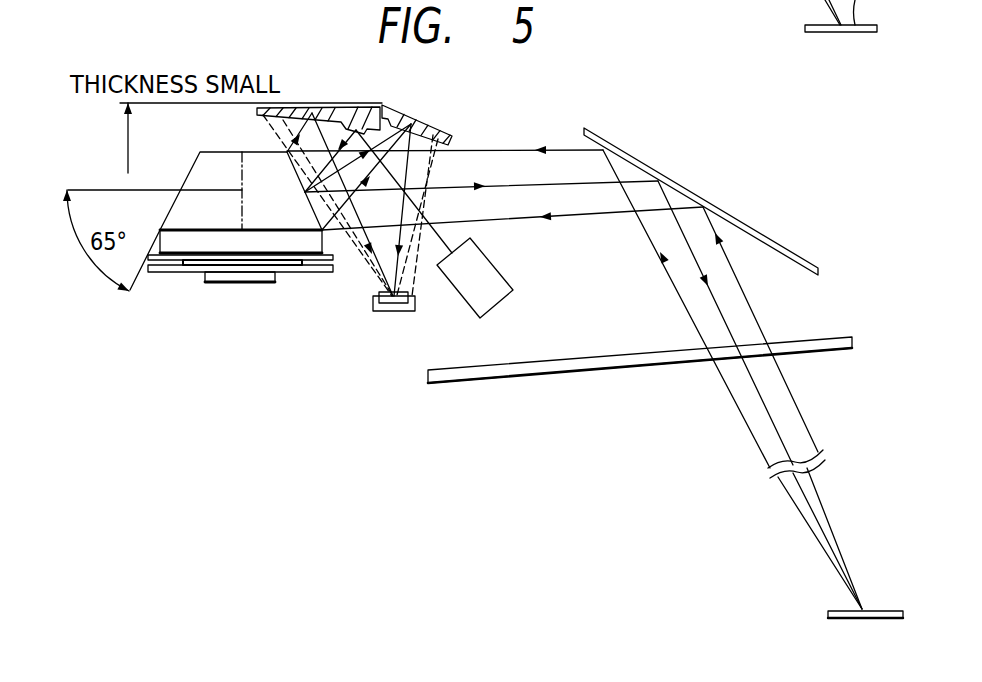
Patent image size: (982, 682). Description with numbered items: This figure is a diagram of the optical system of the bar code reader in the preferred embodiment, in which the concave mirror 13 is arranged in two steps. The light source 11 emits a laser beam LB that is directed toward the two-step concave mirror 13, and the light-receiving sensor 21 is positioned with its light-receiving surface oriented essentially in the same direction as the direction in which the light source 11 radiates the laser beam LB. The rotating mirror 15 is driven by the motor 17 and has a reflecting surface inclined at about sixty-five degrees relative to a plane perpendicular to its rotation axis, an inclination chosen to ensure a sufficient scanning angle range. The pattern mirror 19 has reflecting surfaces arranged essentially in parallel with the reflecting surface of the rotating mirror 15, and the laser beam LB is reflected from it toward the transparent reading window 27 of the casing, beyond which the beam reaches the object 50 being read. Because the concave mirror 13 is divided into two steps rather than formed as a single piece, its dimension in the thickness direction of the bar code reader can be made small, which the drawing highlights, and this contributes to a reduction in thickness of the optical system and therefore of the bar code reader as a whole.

The light source 11 is at (492, 260).
The concave mirror 13 is at (428, 131).
The rotating mirror 15 is at (288, 222).
The motor 17 is at (198, 245).
The pattern mirror 19 is at (617, 146).
The light-receiving sensor 21 is at (387, 312).
The transparent reading window 27 is at (473, 378).
The optical disk 50 is at (877, 610).
The laser beam LB is at (757, 393).